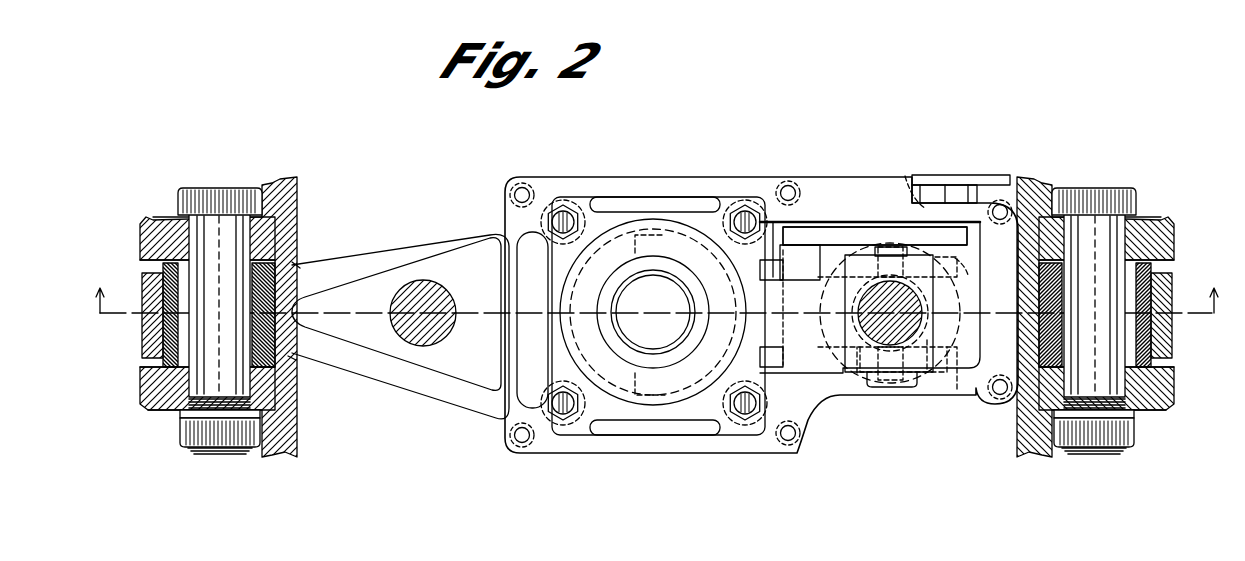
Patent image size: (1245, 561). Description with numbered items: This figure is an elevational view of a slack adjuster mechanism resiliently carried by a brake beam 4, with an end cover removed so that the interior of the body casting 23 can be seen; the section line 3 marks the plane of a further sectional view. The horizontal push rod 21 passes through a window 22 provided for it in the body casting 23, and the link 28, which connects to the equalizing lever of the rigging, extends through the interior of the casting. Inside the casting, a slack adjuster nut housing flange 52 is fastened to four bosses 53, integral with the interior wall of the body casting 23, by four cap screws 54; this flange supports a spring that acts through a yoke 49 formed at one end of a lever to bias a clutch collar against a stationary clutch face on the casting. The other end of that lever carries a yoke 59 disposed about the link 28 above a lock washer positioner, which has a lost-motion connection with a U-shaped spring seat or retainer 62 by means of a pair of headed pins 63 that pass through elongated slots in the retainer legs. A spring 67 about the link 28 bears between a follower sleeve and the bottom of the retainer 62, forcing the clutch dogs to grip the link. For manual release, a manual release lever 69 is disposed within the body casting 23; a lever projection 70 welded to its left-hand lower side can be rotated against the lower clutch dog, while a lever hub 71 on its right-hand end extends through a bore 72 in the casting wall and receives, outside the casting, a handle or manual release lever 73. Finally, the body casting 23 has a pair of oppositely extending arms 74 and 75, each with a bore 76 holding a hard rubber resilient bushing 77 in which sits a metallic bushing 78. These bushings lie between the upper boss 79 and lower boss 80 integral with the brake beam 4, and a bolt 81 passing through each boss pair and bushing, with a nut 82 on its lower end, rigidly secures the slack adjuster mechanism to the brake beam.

The section line 3- 3 is at (656, 289).
The brake beam 4 is at (160, 226).
The push rod 21 is at (437, 327).
The window 22 is at (450, 363).
The body casting 23 is at (487, 228).
The link 28 is at (905, 300).
The yoke 49 is at (635, 245).
The slack adjuster nut housing flange 52 is at (562, 257).
The bosses 53 is at (583, 214).
The cap screws 54 is at (566, 206).
The yoke 59 is at (952, 260).
The spring seat or retainer 62 is at (934, 335).
The headed pins 63 is at (888, 258).
The spring 67 is at (856, 373).
The manual release lever 69 is at (843, 237).
The lever projection 70 is at (814, 258).
The lever hub 71 is at (935, 200).
The bore 72 is at (905, 182).
The handle or manual release lever 73 is at (968, 180).
The arm 74 is at (293, 270).
The arm 75 is at (1036, 341).
The bore 76 is at (287, 358).
The resilient bushing 77 is at (170, 301).
The metallic bushing 78 is at (165, 325).
The upper boss 79 is at (165, 253).
The lower boss 80 is at (165, 376).
The bolt 81 is at (208, 232).
The nut 82 is at (188, 428).